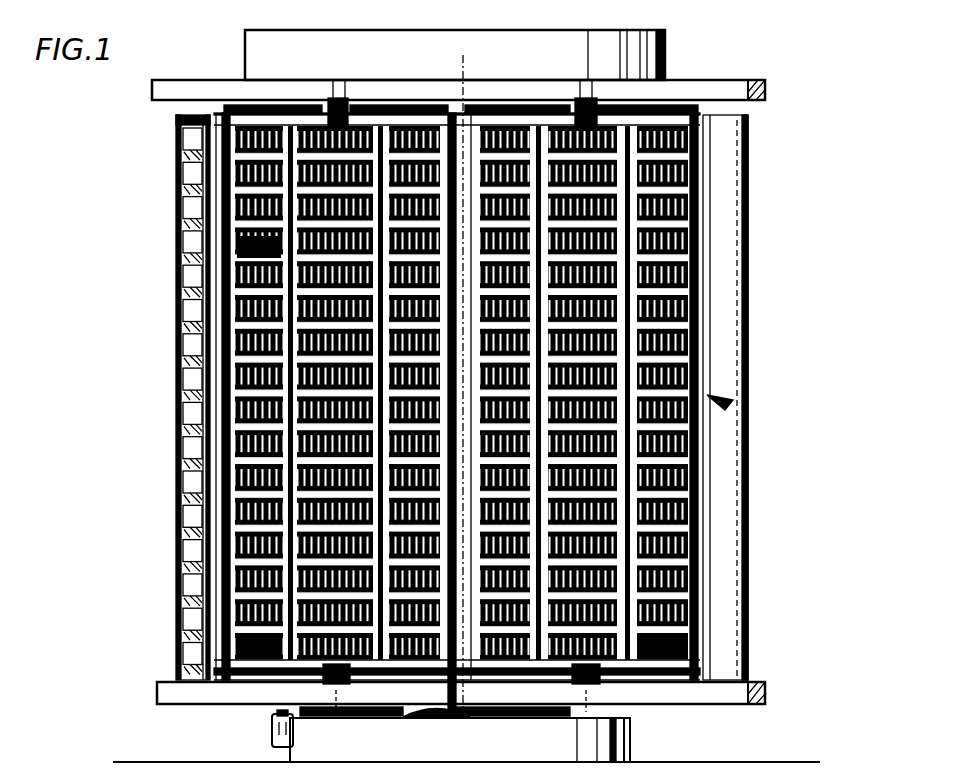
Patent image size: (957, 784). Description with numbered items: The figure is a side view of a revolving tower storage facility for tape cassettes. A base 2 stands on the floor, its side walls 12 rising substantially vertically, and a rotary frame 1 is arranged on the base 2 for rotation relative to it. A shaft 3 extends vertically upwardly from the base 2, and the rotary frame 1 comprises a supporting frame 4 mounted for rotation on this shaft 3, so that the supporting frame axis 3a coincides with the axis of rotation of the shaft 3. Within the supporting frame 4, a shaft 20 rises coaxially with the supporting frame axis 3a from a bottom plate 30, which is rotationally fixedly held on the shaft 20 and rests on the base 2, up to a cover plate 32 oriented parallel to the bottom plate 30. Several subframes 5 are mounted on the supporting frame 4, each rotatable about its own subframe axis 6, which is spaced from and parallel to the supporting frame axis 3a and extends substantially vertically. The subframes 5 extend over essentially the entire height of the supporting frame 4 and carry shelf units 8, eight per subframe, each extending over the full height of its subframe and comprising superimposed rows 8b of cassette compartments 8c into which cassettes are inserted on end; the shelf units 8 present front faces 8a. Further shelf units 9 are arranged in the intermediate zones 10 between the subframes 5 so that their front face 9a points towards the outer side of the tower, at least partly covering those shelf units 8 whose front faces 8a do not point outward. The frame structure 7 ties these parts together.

The rotary frame 1 is at (125, 724).
The base 2 is at (660, 740).
The shaft 3 is at (446, 96).
The supporting frame axis 3a is at (462, 88).
The supporting frame 4 is at (152, 90).
The subframes 5 is at (730, 404).
The subframe axis 6 is at (350, 96).
The frame 7 is at (235, 480).
The shelf units 8 is at (238, 540).
The front faces 8a is at (238, 653).
The superimposed rows 8b is at (672, 415).
The cassette compartments 8c is at (293, 240).
The further shelf units 9 is at (178, 357).
The front face 9a is at (178, 328).
The intermediate zones 10 is at (232, 668).
The side walls 12 is at (283, 757).
The shaft 20 is at (440, 100).
The bottom plate 30 is at (765, 702).
The cover plate 32 is at (760, 83).